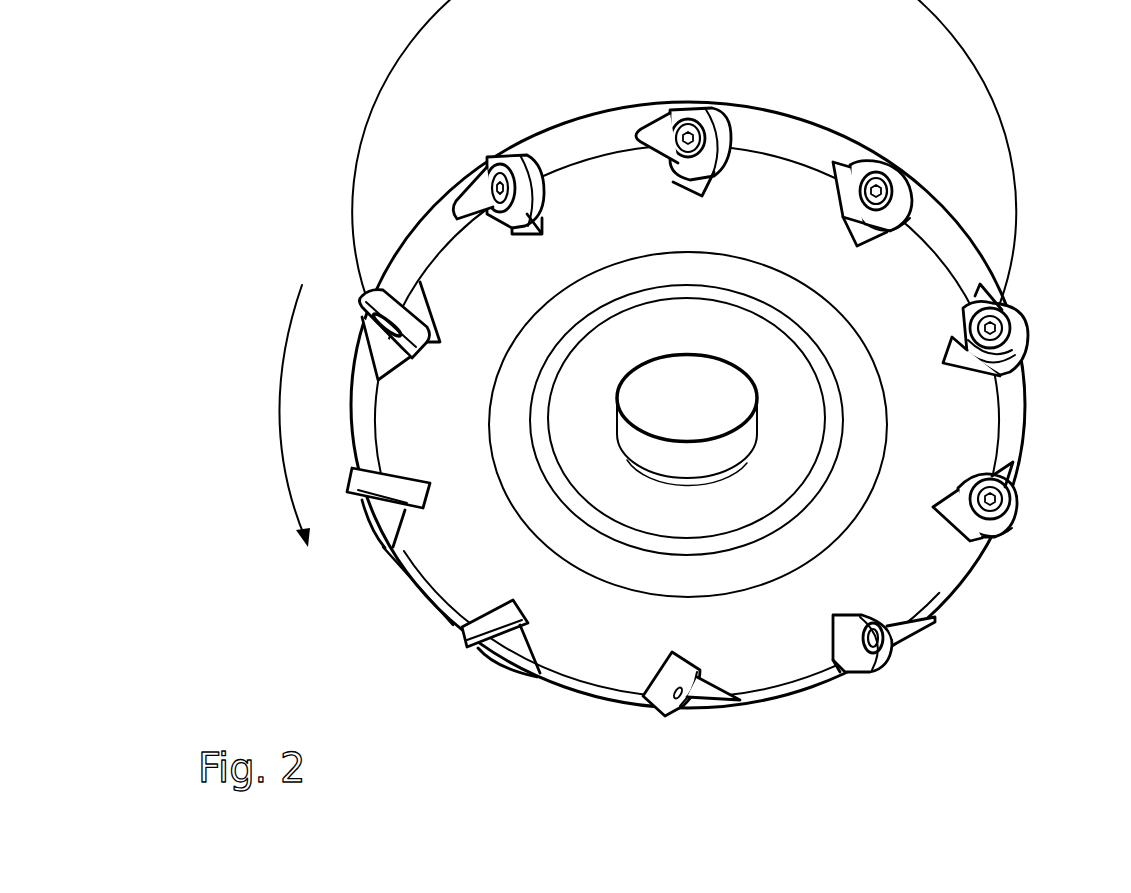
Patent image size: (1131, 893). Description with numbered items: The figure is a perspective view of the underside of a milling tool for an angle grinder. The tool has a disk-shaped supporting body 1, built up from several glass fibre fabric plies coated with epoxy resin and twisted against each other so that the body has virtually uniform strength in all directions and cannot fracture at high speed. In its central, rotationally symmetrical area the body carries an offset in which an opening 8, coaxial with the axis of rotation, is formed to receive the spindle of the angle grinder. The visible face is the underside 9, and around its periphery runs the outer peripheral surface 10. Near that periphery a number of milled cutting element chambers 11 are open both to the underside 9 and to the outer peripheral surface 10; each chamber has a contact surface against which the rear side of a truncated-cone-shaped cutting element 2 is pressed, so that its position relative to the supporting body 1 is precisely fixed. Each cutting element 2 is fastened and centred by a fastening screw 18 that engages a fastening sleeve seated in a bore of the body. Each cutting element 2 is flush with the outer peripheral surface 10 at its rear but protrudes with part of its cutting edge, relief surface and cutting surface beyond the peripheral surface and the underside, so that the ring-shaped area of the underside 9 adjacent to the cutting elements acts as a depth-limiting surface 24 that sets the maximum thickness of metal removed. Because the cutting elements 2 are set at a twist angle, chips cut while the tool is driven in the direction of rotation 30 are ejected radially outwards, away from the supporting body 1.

The supporting body 1 is at (937, 141).
The cutting element 2 is at (896, 646).
The opening 8 is at (720, 414).
The underside 9 is at (468, 584).
The outer peripheral surface 10 is at (396, 569).
The cutting element chamber 11 is at (990, 543).
The fastening screw 18 is at (1003, 327).
The depth-limiting surface 24 is at (952, 415).
The direction of rotation 30 is at (281, 381).